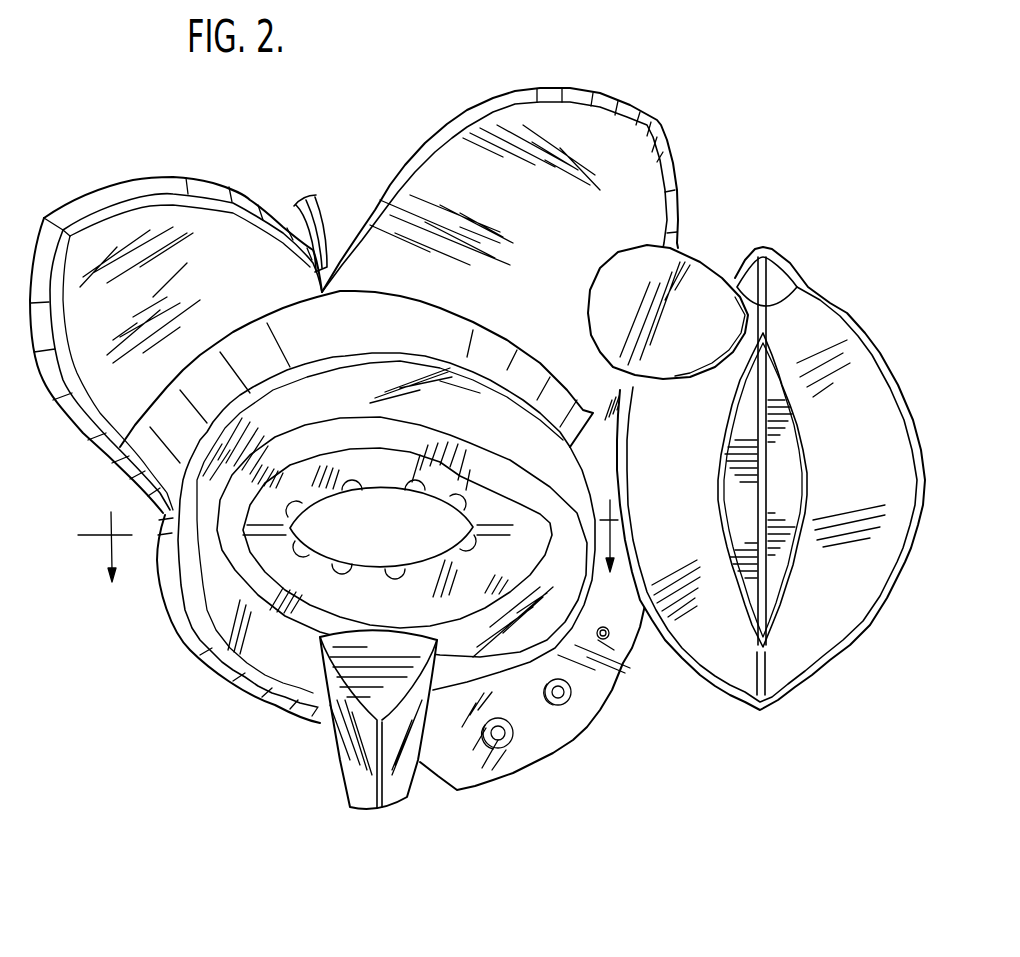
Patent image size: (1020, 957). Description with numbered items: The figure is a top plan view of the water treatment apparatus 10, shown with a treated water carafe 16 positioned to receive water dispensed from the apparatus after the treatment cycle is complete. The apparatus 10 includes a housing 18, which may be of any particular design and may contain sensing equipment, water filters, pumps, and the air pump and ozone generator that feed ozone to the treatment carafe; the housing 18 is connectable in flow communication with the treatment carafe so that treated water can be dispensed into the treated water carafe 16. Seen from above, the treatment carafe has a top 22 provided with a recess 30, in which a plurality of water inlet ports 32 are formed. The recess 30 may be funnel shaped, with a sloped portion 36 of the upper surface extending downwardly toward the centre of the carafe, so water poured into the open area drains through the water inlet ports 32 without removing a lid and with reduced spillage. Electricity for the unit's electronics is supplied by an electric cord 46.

The water treatment apparatus 10 is at (452, 86).
The treated water carafe 16 is at (865, 340).
The housing 18 is at (245, 248).
The top 22 is at (247, 567).
The recess 30 is at (330, 513).
The water inlet ports 32 is at (457, 503).
The sloped portion 36 is at (452, 492).
The electric cord 46 is at (323, 208).